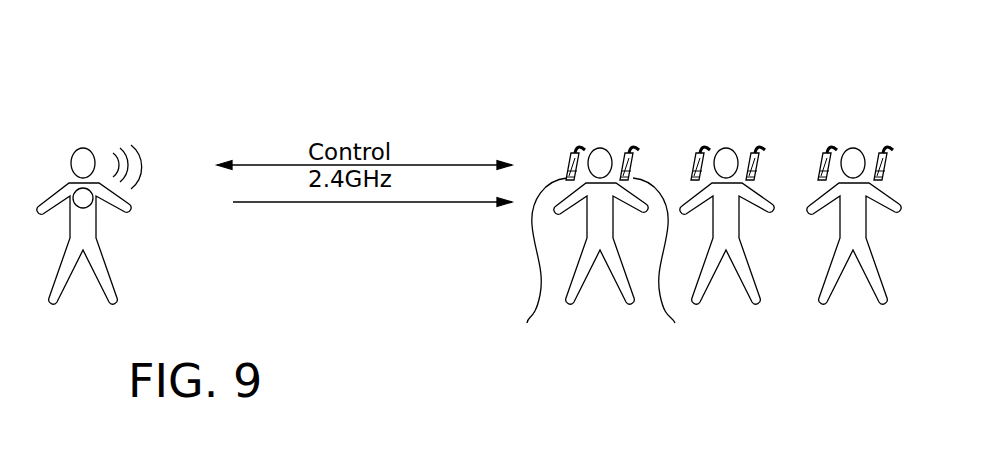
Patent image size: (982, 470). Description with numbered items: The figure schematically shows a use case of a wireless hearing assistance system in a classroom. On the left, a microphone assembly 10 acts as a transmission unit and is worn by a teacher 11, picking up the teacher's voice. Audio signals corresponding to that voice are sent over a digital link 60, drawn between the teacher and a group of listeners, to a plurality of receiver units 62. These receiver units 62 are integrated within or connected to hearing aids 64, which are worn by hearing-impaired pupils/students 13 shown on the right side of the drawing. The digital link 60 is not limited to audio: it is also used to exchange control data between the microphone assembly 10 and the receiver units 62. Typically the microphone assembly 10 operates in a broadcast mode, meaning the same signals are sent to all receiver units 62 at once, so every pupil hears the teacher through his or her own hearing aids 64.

The microphone assembly 10 is at (80, 207).
The teacher 11 is at (84, 146).
The hearing-impaired pupils/students 13 is at (600, 146).
The digital link 60 is at (370, 230).
The receiver units 62 is at (597, 264).
The hearing aids 64 is at (576, 147).